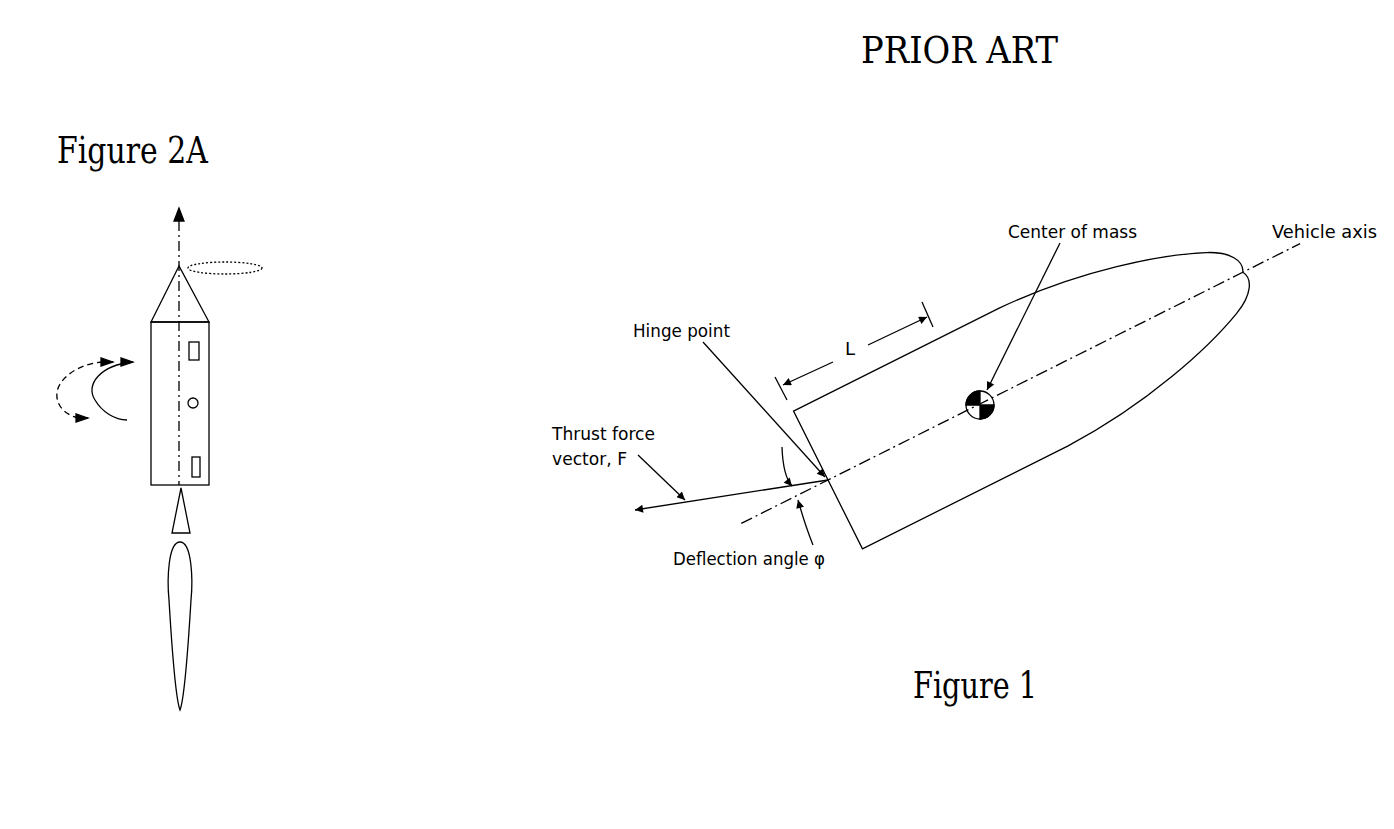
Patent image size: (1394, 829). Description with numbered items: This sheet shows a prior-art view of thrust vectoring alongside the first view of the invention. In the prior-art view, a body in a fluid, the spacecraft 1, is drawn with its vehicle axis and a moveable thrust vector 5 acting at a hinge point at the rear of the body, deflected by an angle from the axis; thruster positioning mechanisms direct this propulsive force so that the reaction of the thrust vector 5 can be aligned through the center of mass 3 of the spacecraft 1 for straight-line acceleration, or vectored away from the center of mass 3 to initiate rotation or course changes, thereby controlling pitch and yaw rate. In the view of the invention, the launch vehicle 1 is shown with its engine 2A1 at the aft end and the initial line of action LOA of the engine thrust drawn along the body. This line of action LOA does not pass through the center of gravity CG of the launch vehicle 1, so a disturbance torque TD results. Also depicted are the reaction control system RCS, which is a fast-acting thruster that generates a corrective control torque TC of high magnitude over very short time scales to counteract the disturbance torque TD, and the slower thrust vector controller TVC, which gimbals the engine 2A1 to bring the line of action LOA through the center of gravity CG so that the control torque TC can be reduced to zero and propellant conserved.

In FIG. 1, the spacecraft 1 is at (1232, 310).
In FIG. 2A, the spacecraft 1 is at (210, 390).
In FIG. 1, the center of mass 3 is at (994, 418).
In FIG. 1, the thrust vector 5 is at (768, 483).
In FIG. 2A, the engine 2A1 is at (190, 523).
In FIG. 2A, the line of action LOA is at (182, 233).
In FIG. 2A, the control torque TC is at (232, 275).
In FIG. 2A, the disturbance torque TD is at (113, 360).
In FIG. 2A, the reaction control system RCS is at (200, 350).
In FIG. 2A, the center of gravity CG is at (197, 410).
In FIG. 2A, the thrust vector controller TVC is at (200, 467).